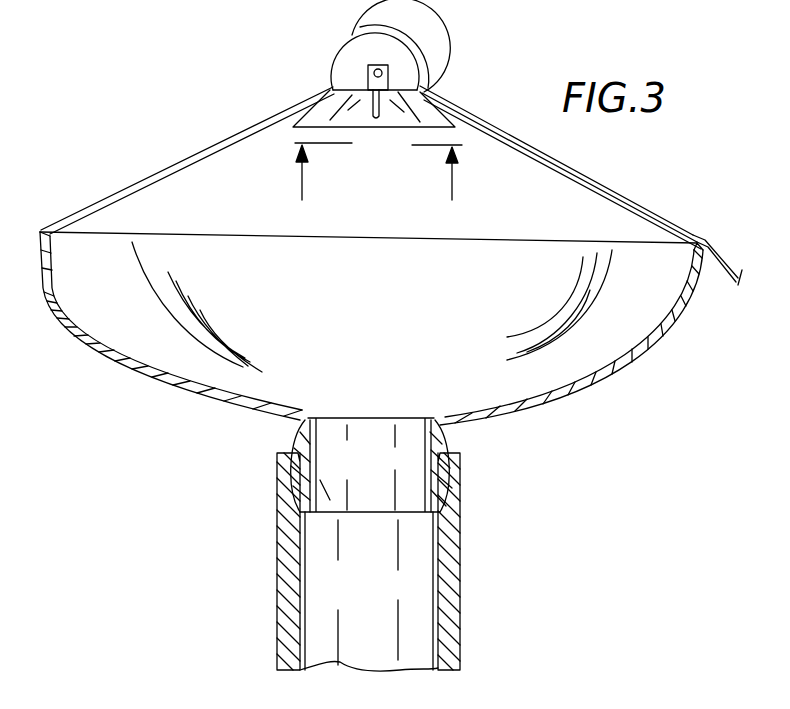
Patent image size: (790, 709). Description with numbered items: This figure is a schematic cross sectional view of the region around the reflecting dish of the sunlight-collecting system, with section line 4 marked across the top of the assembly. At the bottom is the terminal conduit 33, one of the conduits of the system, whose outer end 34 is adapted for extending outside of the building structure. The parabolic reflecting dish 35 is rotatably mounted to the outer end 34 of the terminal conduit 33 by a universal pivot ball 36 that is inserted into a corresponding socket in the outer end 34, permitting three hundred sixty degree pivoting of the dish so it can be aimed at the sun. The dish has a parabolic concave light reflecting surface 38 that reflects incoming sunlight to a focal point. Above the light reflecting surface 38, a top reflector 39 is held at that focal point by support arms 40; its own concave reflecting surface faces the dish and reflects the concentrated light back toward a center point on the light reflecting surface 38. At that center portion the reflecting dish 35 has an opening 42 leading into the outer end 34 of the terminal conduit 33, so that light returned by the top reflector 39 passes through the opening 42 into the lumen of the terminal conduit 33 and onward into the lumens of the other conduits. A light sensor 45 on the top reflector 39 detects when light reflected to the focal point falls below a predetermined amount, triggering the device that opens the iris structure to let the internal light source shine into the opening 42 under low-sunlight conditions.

The terminal conduit 33 is at (458, 597).
The outer end 34 is at (455, 452).
The parabolic reflecting dish 35 is at (658, 344).
The universal pivot ball 36 is at (290, 440).
The light reflecting surface 38 is at (648, 268).
The top reflector 39 is at (353, 33).
The support arms 40 is at (195, 155).
The opening 42 is at (335, 478).
The light sensor 45 is at (377, 117).
The section line 4- 4 is at (376, 190).